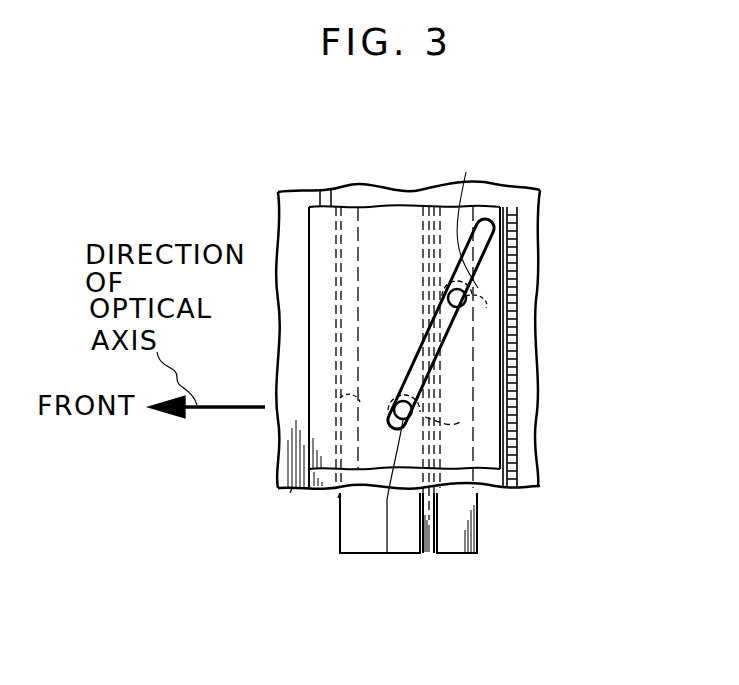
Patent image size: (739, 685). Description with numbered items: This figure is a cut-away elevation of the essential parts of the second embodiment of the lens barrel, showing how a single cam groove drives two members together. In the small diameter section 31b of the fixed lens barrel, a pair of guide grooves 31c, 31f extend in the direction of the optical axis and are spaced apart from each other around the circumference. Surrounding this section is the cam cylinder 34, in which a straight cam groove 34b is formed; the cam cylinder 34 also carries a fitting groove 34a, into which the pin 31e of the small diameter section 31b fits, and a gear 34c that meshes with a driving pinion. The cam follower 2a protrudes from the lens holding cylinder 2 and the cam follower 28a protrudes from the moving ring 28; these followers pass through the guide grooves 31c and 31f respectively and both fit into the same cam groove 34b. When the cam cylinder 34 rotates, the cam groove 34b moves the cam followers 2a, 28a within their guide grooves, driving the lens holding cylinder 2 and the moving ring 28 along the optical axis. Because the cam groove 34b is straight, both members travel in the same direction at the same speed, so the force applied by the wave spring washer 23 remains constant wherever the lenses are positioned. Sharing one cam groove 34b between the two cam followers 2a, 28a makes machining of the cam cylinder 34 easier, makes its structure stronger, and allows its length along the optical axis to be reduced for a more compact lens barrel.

The lens holding cylinder 2 is at (353, 530).
The cam follower 2a is at (387, 553).
The wave spring washer 23 is at (430, 553).
The moving ring 28 is at (455, 550).
The cam follower 28a is at (470, 308).
The small diameter section 31b is at (292, 488).
The guide groove 31c is at (500, 424).
The pin 31e is at (338, 498).
The guide groove 31f is at (505, 270).
The cam cylinder 34 is at (321, 208).
The fitting groove 34a is at (345, 210).
The cam groove 34b is at (459, 212).
The gear 34c is at (512, 372).